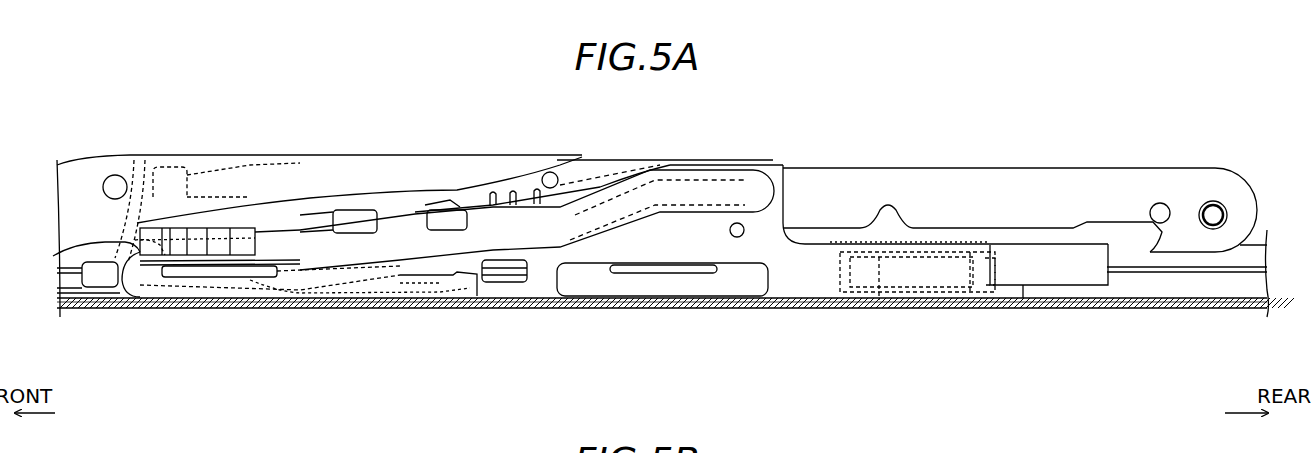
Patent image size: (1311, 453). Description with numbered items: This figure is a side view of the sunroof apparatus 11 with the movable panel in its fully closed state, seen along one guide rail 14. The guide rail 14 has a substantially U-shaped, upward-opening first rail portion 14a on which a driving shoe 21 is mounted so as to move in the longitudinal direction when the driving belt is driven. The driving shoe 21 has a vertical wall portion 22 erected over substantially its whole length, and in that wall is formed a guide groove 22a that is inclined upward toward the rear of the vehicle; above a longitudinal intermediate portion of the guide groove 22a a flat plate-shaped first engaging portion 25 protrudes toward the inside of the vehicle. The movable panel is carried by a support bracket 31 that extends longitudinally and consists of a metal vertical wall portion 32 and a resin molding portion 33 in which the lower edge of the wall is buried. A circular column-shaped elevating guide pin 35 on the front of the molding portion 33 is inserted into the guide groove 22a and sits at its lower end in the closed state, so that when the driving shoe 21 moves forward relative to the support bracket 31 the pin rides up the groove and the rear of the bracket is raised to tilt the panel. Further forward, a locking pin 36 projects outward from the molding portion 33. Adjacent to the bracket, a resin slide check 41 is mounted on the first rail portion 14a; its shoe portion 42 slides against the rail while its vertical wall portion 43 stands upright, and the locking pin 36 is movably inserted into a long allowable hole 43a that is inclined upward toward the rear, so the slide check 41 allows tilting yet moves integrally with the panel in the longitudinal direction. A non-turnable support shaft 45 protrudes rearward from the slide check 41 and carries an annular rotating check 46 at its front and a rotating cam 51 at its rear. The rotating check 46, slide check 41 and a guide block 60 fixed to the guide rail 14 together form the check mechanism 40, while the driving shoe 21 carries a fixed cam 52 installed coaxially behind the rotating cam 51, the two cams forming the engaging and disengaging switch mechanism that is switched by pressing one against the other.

The sunroof apparatus 11 is at (410, 142).
The guide rail 14 is at (1202, 311).
The first rail portion 14a is at (1138, 292).
The driving shoe 21 is at (790, 192).
The vertical wall portion 22 is at (355, 210).
The guide groove 22a is at (488, 200).
The first engaging portion 25 is at (385, 208).
The support bracket 31 is at (1027, 168).
The vertical wall portion 32 is at (1110, 176).
The molding portion 33 is at (1096, 248).
The elevating guide pin 35 is at (185, 304).
The locking pin 36 is at (133, 304).
The check mechanism 40 is at (280, 305).
The slide check 41 is at (62, 292).
The shoe portion 42 is at (85, 304).
The vertical wall portion 43 is at (138, 160).
The allowable hole 43a is at (182, 165).
The support shaft 45 is at (320, 212).
The rotating check 46 is at (245, 224).
The rotating cam 51 is at (372, 306).
The fixed cam 52 is at (913, 227).
The guide block 60 is at (427, 212).